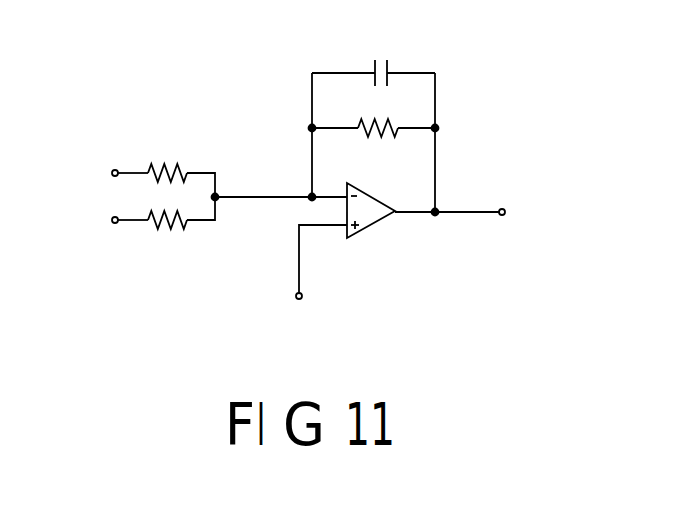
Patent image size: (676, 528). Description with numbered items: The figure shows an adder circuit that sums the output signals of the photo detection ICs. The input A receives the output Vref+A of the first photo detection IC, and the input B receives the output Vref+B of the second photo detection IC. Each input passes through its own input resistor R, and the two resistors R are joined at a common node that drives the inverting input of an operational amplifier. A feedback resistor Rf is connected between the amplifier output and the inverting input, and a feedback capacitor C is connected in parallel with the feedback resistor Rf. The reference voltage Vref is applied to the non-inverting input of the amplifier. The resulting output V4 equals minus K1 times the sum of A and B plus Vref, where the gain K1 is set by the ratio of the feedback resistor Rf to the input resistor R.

The input Va A is at (120, 172).
The input Vb B is at (120, 220).
The input resistor R is at (181, 182).
The feedback resistor Rf is at (374, 114).
The feedback capacitor C is at (373, 59).
The reference voltage Vref is at (318, 278).
The output V4 is at (466, 210).